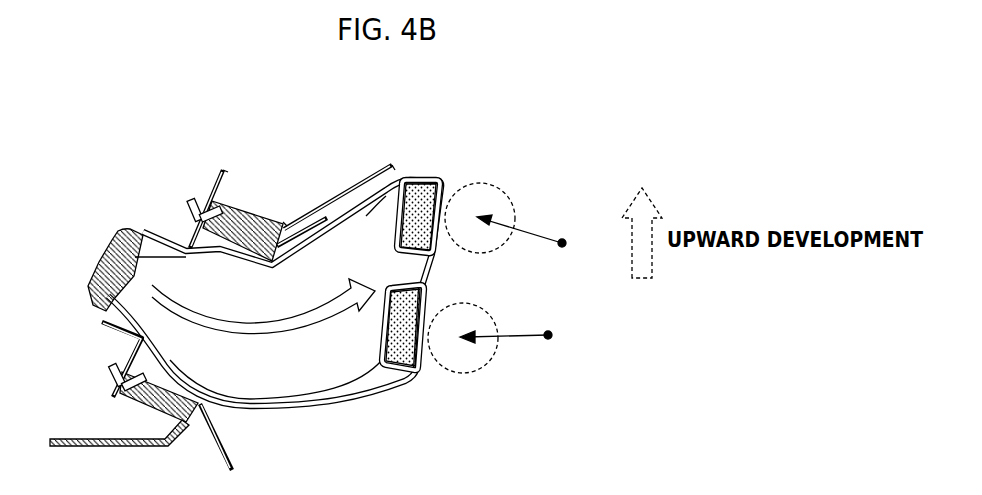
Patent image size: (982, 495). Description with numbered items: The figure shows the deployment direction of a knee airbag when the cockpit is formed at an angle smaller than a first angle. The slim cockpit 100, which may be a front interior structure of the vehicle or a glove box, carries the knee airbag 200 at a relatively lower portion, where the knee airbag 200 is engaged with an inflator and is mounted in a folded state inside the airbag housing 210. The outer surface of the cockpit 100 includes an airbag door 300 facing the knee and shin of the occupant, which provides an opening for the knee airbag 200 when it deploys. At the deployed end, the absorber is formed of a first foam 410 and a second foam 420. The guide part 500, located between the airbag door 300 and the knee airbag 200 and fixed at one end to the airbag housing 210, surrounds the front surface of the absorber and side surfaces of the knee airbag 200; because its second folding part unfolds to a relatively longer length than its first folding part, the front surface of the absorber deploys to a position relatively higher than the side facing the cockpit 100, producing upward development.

The cockpit 100 is at (358, 180).
The knee airbag 200 is at (366, 216).
The airbag housing 210 is at (240, 213).
The airbag door 300 is at (300, 232).
The first foam 410 is at (445, 181).
The second foam 420 is at (407, 377).
The guide part 500 is at (426, 196).